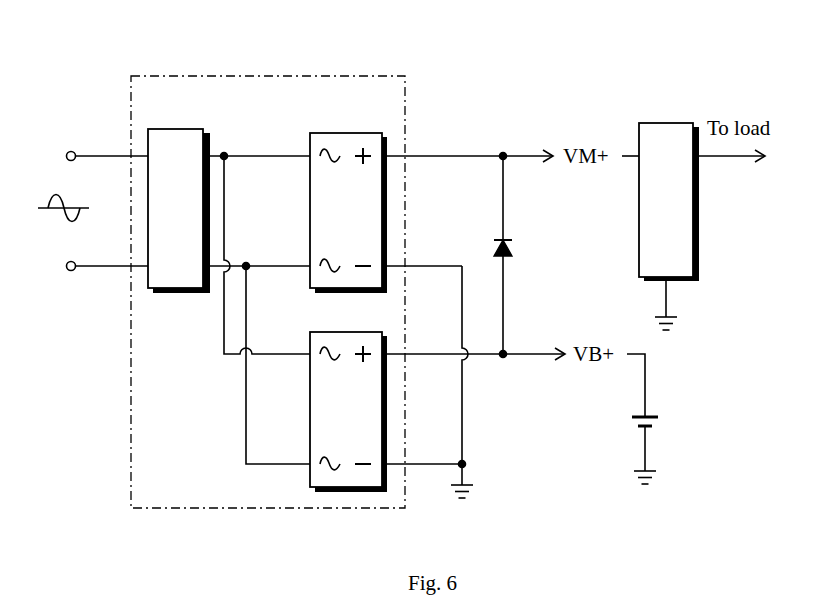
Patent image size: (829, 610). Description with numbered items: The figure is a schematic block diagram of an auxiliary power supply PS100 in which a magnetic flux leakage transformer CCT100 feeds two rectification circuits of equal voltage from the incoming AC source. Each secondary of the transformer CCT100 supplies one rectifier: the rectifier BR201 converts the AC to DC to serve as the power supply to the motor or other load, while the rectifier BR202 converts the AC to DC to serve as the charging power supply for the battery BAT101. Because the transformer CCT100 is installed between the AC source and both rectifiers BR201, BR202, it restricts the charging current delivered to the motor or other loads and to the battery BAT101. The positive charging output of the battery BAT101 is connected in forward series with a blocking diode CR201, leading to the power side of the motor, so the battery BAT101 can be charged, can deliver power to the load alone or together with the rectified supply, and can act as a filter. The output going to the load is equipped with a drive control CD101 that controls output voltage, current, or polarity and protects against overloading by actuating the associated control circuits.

The auxiliary power supply PS100 is at (268, 76).
The magnetic flux leakage transformer CCT100 is at (168, 129).
The rectifier BR201 is at (362, 133).
The rectifier BR202 is at (362, 332).
The blocking diode CR201 is at (540, 255).
The drive control CD101 is at (668, 123).
The battery BAT101 is at (603, 419).